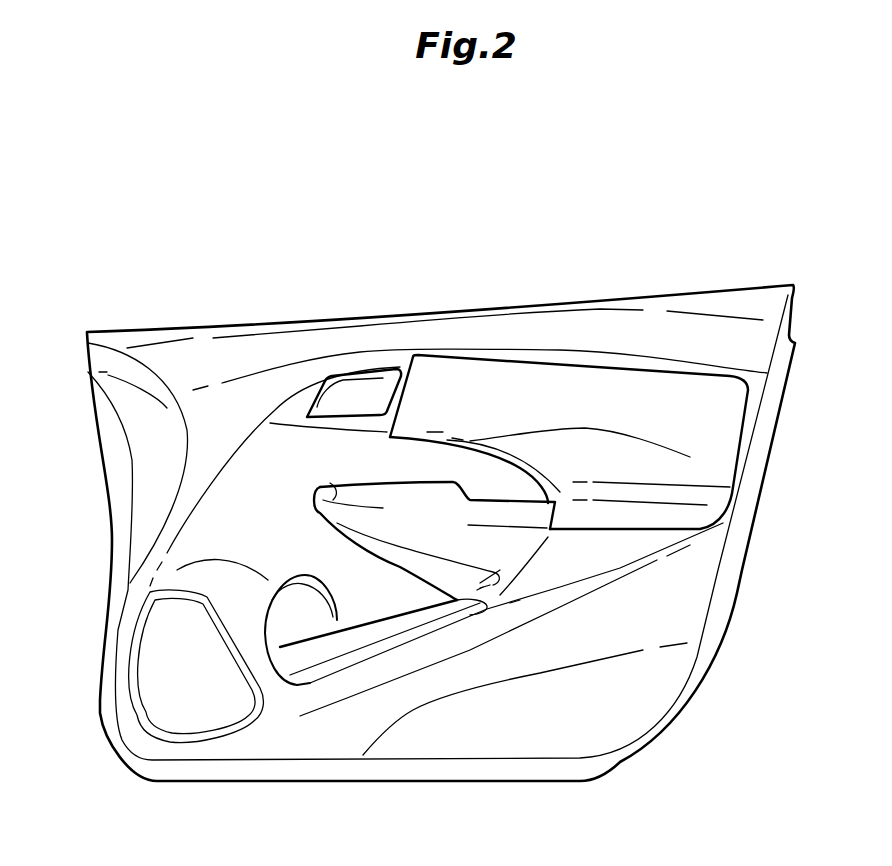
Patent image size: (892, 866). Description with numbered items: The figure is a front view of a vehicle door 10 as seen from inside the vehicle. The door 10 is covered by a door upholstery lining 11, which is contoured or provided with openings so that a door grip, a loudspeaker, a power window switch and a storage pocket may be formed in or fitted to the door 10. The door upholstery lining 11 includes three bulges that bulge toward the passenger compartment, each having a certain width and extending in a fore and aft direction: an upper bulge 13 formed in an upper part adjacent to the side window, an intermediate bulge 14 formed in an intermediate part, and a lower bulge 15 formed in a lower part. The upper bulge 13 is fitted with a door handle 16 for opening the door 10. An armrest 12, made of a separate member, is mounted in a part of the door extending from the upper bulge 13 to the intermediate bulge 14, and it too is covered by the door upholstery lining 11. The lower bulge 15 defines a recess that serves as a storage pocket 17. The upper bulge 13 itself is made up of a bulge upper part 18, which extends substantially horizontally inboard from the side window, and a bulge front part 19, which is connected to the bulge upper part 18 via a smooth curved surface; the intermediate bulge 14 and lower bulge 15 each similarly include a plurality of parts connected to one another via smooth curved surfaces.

The vehicle door 10 is at (516, 219).
The door upholstery lining 11 is at (338, 345).
The armrest 12 is at (540, 382).
The upper bulge 13 is at (182, 340).
The intermediate bulge 14 is at (313, 493).
The lower bulge 15 is at (517, 662).
The door handle 16 is at (398, 374).
The storage pocket 17 is at (293, 617).
The bulge upper part 18 is at (240, 333).
The bulge front part 19 is at (300, 348).